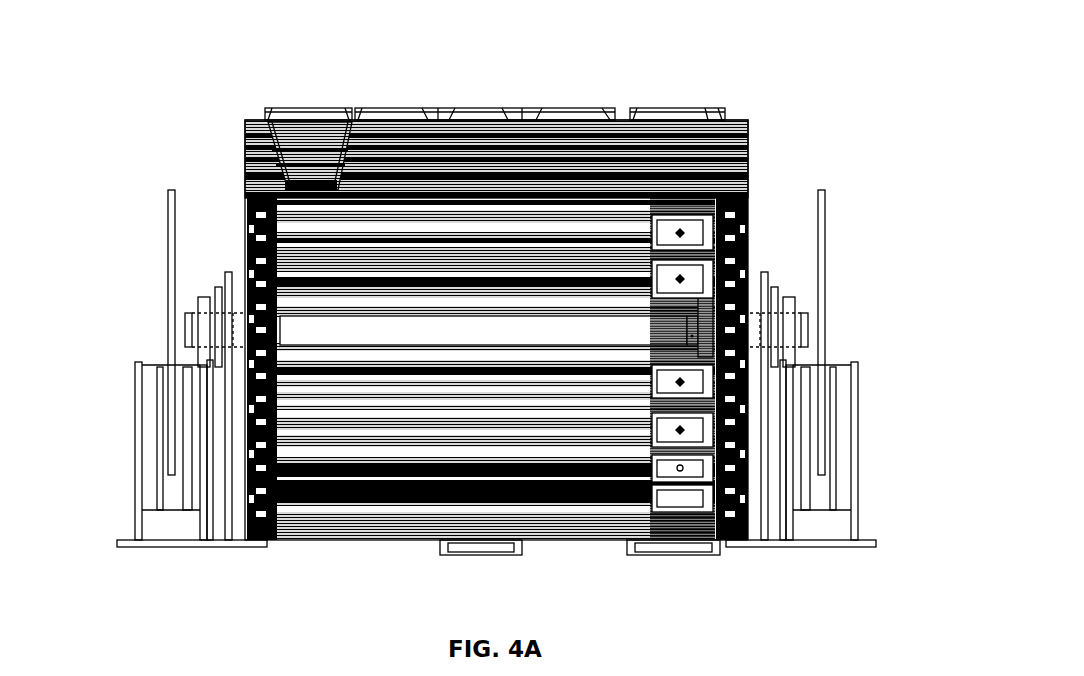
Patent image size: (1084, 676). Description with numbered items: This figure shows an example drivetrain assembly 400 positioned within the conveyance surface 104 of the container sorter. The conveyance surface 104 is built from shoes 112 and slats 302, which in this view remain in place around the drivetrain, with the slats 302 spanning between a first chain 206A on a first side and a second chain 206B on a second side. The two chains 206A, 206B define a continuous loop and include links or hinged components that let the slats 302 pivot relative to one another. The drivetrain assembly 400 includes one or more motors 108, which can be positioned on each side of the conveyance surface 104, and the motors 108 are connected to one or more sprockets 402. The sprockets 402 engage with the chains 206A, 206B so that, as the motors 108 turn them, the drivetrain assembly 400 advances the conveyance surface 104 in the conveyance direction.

The drivetrain assembly 400 is at (138, 60).
The conveyance surface 104 is at (248, 122).
The shoes 112 is at (297, 170).
The slats 302 is at (740, 150).
The sprockets 402 is at (762, 230).
The motors 108 is at (128, 302).
The first chain 206A is at (723, 503).
The second chain 206B is at (260, 500).